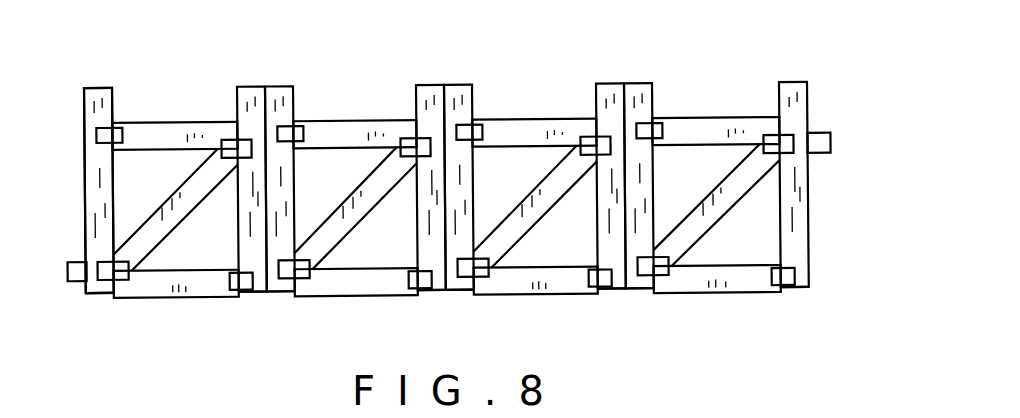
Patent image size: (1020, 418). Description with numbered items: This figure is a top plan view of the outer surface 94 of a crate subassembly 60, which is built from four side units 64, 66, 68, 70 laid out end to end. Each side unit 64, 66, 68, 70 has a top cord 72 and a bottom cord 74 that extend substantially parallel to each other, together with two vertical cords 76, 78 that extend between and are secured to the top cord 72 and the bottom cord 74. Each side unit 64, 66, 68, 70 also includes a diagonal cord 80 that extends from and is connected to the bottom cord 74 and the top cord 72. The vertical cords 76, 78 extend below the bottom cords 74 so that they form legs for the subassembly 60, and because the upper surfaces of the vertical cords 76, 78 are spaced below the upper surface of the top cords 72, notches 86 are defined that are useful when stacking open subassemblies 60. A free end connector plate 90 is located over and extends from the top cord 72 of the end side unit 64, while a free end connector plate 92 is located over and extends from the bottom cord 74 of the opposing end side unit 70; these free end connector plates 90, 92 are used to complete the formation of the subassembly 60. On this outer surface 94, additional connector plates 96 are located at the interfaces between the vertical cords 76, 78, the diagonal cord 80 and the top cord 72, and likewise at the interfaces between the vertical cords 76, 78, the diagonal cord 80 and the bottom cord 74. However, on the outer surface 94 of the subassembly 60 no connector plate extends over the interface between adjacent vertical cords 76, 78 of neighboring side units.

The crate subassembly 60 is at (784, 50).
The side unit 64 is at (173, 305).
The side unit 66 is at (354, 305).
The side unit 68 is at (533, 305).
The side unit 70 is at (714, 305).
The top cord 72 is at (197, 288).
The bottom cord 74 is at (165, 138).
The vertical cord 76 is at (103, 212).
The vertical cord 78 is at (250, 192).
The diagonal cord 80 is at (195, 190).
The notch 86 is at (105, 308).
The free end connector plate 90 is at (67, 270).
The free end connector plate 92 is at (831, 142).
The outer surface 94 is at (85, 122).
The connector plate 96 is at (122, 126).